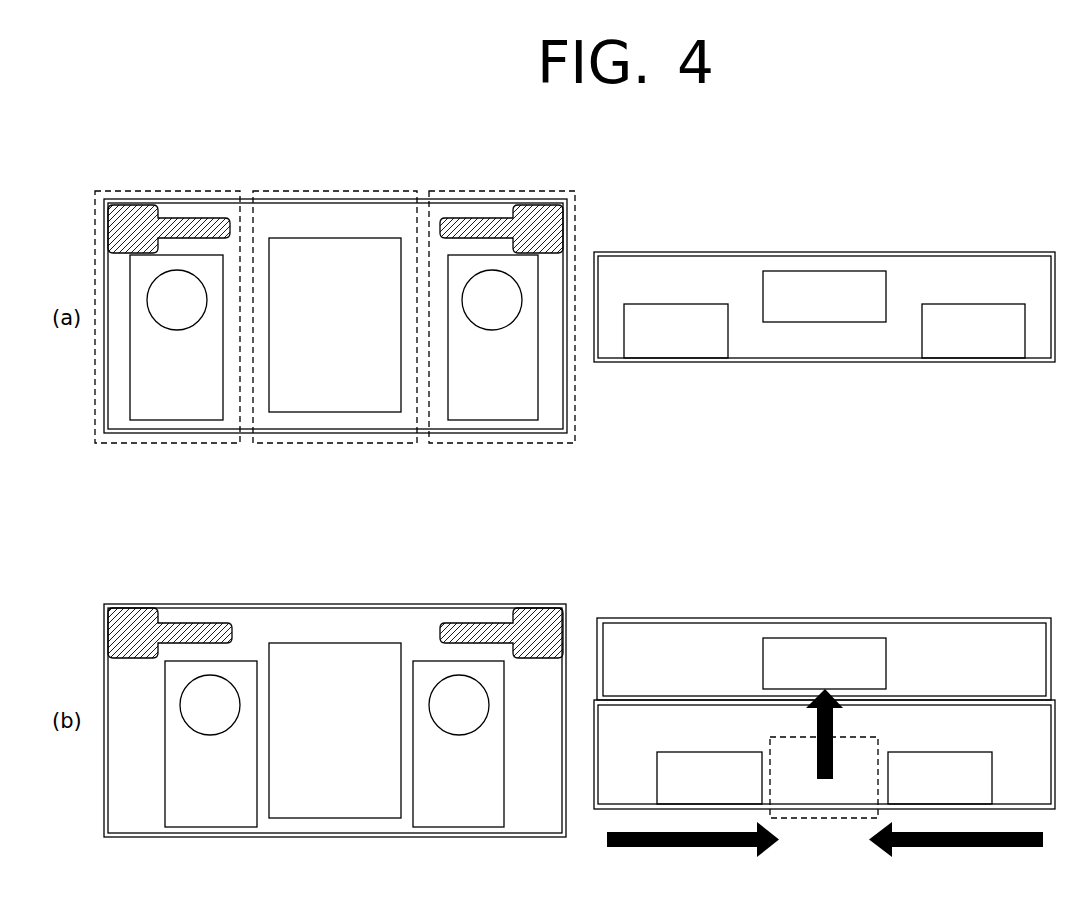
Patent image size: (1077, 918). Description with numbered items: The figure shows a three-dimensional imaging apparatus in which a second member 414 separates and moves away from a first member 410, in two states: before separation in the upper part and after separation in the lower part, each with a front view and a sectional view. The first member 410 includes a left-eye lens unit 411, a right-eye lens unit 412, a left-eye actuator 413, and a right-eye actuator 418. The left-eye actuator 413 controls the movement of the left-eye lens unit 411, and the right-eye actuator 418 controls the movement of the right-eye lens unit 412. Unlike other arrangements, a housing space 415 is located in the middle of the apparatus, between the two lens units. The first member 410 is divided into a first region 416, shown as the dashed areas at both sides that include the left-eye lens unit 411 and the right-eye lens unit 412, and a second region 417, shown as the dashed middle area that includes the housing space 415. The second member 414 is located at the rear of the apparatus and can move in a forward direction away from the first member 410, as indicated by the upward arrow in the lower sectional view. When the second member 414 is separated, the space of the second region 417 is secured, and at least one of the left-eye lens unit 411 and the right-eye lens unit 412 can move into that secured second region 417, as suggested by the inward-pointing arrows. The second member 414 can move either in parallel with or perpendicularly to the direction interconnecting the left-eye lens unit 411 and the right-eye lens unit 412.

The first member 410 is at (327, 200).
The left-eye lens unit 411 is at (157, 390).
The right-eye lens unit 412 is at (473, 390).
The left-eye actuator 413 is at (128, 217).
The second member 414 is at (683, 618).
The housing space 415 is at (313, 390).
The first region 416 is at (205, 443).
The second region 417 is at (377, 443).
The right-eye actuator 418 is at (540, 217).